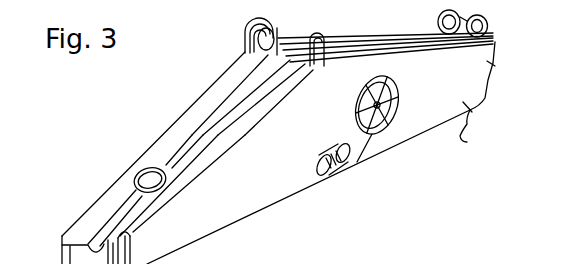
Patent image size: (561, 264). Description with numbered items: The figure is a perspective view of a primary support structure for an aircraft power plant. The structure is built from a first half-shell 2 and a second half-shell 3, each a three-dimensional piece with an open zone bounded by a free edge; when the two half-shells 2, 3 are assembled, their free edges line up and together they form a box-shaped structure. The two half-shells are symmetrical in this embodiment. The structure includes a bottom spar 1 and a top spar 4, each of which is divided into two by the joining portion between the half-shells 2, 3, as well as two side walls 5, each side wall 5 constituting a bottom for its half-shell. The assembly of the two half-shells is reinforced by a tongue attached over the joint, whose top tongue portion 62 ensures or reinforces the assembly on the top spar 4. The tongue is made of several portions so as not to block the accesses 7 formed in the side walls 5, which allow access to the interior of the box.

The bottom spar 1 is at (399, 145).
The first half-shell 2 is at (493, 63).
The second half-shell 3 is at (163, 132).
The top spar 4 is at (219, 87).
The side wall 5 is at (470, 130).
The access 7 is at (356, 157).
The top tongue portion 62 is at (321, 259).